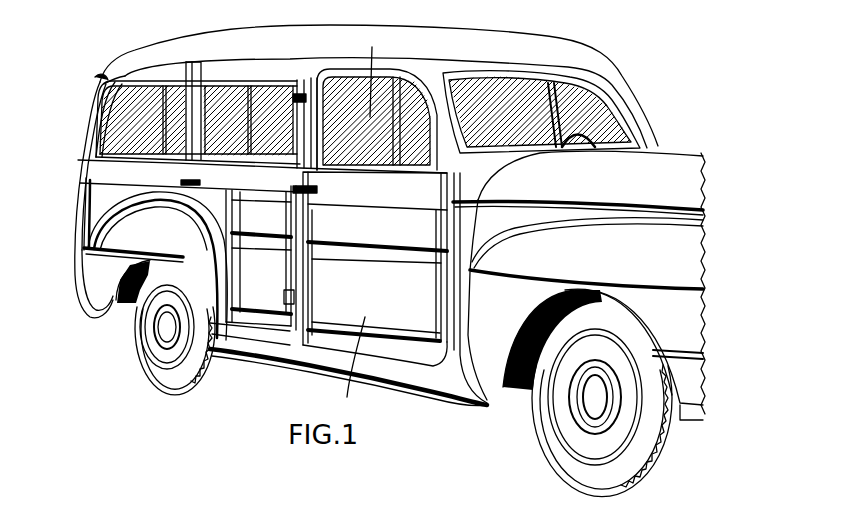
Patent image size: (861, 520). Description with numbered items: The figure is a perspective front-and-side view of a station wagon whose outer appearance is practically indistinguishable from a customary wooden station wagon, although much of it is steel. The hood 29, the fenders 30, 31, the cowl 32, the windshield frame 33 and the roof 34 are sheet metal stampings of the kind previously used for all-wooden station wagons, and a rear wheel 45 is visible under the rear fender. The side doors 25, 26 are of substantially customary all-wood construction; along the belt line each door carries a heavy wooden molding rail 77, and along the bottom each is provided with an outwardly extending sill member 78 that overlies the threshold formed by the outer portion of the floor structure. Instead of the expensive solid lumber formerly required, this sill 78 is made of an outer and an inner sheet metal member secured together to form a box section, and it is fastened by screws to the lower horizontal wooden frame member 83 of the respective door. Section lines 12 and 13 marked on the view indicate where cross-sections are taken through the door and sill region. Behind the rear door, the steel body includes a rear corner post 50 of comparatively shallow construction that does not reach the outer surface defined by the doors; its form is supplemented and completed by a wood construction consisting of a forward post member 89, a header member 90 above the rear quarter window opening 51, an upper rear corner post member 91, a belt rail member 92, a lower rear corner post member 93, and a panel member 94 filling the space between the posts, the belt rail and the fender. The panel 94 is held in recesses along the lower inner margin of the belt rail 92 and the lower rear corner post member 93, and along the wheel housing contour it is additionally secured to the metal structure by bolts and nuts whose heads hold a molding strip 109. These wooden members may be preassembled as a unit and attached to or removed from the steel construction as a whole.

The section line 12- 12 is at (390, 47).
The section line 13- 13 is at (380, 312).
The side door 25 is at (381, 290).
The side door 26 is at (262, 298).
The hood 29 is at (687, 178).
The fender 30 is at (690, 260).
The fender 31 is at (100, 308).
The cowl 32 is at (475, 243).
The windshield frame 33 is at (648, 123).
The roof 34 is at (552, 49).
The rear wheel 45 is at (178, 377).
The rear corner post 50 is at (90, 103).
The rear quarter window opening 51 is at (126, 77).
The wooden molding rail 77 is at (252, 187).
The sill member 78 is at (277, 340).
The lower horizontal wooden frame member 83 is at (402, 340).
The forward post member 89 is at (196, 73).
The header member 90 is at (183, 72).
The upper rear corner post member 91 is at (95, 132).
The belt rail member 92 is at (83, 168).
The lower rear corner post member 93 is at (82, 198).
The panel member 94 is at (98, 203).
The molding strip 109 is at (92, 218).